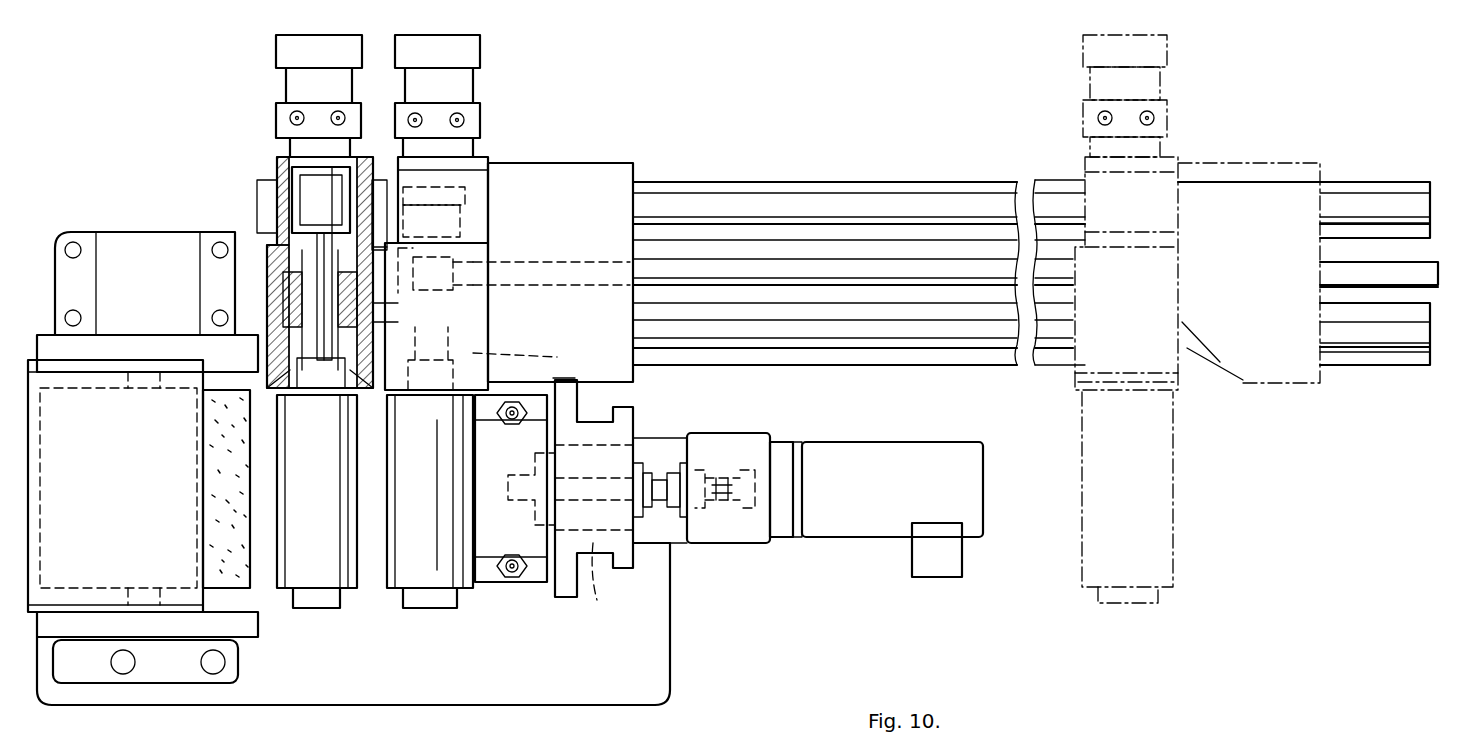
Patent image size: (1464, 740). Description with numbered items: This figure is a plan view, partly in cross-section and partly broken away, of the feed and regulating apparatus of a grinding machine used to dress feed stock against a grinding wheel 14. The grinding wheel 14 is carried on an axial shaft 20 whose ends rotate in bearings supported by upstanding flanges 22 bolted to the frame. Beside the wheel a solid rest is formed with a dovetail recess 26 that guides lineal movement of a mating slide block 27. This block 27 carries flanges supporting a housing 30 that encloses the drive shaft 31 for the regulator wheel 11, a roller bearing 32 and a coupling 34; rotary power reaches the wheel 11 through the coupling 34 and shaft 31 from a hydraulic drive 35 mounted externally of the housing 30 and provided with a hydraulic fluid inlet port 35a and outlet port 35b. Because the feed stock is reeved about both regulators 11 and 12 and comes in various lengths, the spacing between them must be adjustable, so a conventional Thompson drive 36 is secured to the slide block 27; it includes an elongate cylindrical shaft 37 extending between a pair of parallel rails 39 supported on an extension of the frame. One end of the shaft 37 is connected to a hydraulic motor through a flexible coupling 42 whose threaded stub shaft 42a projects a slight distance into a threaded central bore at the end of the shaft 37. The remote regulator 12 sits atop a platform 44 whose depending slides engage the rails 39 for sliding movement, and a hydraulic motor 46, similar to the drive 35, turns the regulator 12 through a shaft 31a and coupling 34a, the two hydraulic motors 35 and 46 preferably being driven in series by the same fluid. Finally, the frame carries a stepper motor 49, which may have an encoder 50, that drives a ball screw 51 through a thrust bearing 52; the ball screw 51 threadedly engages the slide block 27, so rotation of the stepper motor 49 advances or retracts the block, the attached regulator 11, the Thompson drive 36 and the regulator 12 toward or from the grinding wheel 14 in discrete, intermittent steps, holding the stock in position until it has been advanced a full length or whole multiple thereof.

The regulator wheel 11 is at (324, 531).
The remote regulator 12 is at (440, 539).
The grinding wheel 14 is at (250, 575).
The axial shaft 20 is at (152, 597).
The upstanding flanges 22 is at (213, 353).
The dovetail recess 26 is at (593, 497).
The slide block 27 is at (517, 464).
The housing 30 is at (270, 253).
The drive shaft 31 is at (325, 385).
The shaft 31a is at (537, 353).
The roller bearing 32 is at (373, 320).
The coupling 34 is at (300, 193).
The coupling 34a is at (497, 155).
The hydraulic drive 35 is at (300, 83).
The hydraulic fluid inlet port 35a is at (290, 119).
The hydraulic fluid outlet port 35b is at (332, 122).
The Thompson drive 36 is at (1345, 155).
The cylindrical shaft 37 is at (900, 273).
The rails 39 is at (865, 200).
The flexible coupling 42 is at (452, 290).
The threaded stub shaft 42a is at (493, 268).
The platform 44 is at (600, 177).
The hydraulic motor 46 is at (458, 83).
The stepper motor 49 is at (890, 499).
The encoder 50 is at (913, 570).
The ball screw 51 is at (643, 433).
The thrust bearing 52 is at (765, 440).